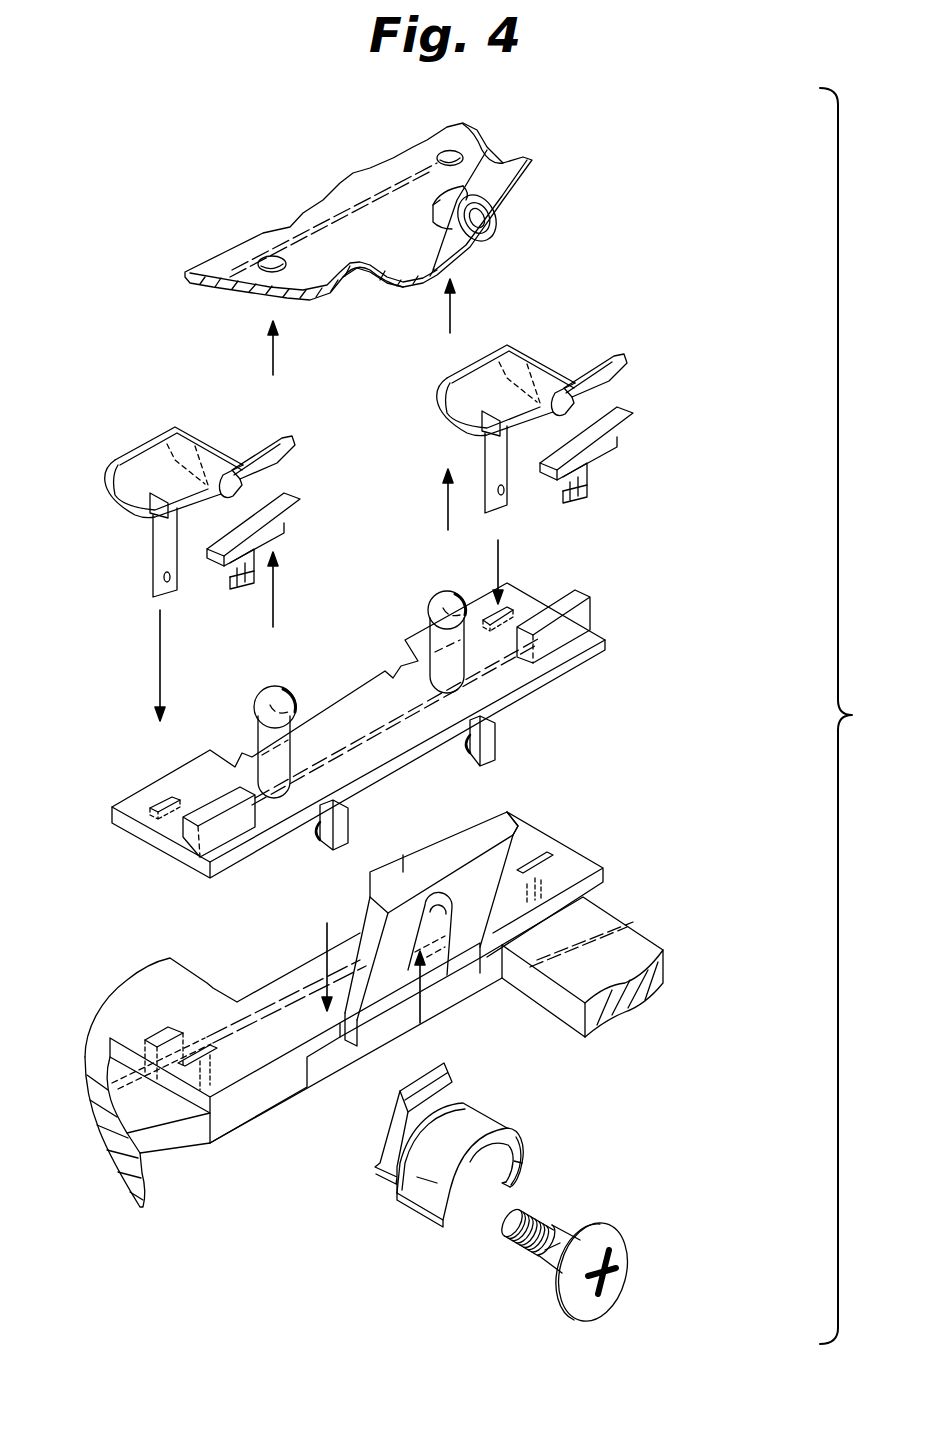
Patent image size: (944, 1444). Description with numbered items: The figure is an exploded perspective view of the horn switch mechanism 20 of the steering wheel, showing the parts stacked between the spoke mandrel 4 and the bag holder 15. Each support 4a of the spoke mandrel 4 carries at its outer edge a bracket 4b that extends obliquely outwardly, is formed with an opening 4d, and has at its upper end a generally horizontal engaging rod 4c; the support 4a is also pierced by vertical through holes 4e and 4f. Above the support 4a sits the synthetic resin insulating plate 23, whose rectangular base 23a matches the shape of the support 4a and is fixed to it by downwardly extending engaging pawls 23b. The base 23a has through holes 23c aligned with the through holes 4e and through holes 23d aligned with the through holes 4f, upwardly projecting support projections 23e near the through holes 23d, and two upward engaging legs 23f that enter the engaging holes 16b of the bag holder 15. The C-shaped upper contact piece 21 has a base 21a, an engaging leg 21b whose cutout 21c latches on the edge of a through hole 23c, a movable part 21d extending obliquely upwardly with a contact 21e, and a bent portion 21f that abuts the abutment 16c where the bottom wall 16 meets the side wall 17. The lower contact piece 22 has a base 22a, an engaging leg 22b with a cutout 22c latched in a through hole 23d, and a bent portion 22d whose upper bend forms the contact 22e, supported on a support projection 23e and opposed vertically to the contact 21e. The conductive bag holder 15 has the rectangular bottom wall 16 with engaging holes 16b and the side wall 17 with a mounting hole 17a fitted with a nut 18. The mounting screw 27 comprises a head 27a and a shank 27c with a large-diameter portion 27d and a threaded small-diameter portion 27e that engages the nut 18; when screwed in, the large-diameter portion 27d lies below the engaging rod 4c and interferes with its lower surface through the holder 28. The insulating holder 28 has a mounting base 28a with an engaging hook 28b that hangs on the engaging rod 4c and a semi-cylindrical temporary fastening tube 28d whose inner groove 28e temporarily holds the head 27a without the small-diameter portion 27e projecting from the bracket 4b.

The spoke mandrel 4 is at (640, 935).
The support 4a is at (263, 963).
The bracket 4b is at (465, 965).
The engaging rod 4c is at (496, 832).
The opening 4d is at (430, 985).
The through hole 4e is at (520, 824).
The through hole 4f is at (553, 850).
The bag holder 15 is at (512, 134).
The bottom wall 16 is at (357, 185).
The engaging hole 16b is at (442, 153).
The abutment 16c is at (403, 293).
The side wall 17 is at (510, 190).
The mounting hole 17a is at (500, 220).
The nut 18 is at (483, 160).
The horn switch mechanism 20 is at (738, 384).
The upper contact piece 21 is at (561, 350).
The base 21a is at (444, 418).
The engaging leg 21b is at (508, 490).
The cutout 21c is at (484, 436).
The movable part 21d is at (517, 346).
The contact 21e is at (612, 382).
The bent portion 21f is at (615, 350).
The lower contact piece 22 is at (652, 413).
The base 22a is at (563, 502).
The engaging leg 22b is at (592, 491).
The cutout 22c is at (592, 471).
The bent portion 22d is at (627, 437).
The contact 22e is at (627, 410).
The insulating plate 23 is at (628, 659).
The base 23a is at (356, 705).
The engaging pawl 23b is at (347, 822).
The through hole 23c is at (165, 798).
The through hole 23d is at (165, 836).
The support projection 23e is at (241, 826).
The engaging leg 23f is at (267, 690).
The mounting screw 27 is at (640, 1235).
The head 27a is at (615, 1283).
The shank 27c is at (440, 1306).
The large-diameter portion 27d is at (545, 1280).
The small-diameter portion 27e is at (503, 1248).
The holder 28 is at (530, 1136).
The mounting base 28a is at (385, 1177).
The engaging hook 28b is at (396, 1095).
The temporary fastening tube 28d is at (480, 1108).
The groove 28e is at (526, 1160).